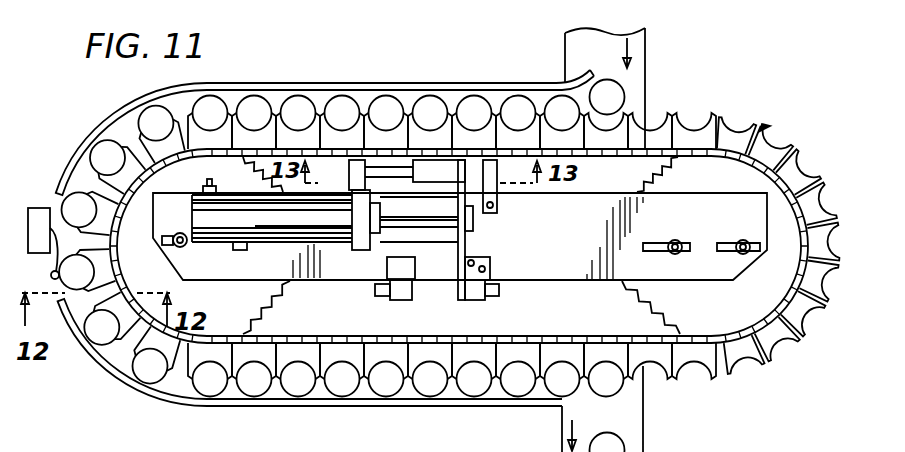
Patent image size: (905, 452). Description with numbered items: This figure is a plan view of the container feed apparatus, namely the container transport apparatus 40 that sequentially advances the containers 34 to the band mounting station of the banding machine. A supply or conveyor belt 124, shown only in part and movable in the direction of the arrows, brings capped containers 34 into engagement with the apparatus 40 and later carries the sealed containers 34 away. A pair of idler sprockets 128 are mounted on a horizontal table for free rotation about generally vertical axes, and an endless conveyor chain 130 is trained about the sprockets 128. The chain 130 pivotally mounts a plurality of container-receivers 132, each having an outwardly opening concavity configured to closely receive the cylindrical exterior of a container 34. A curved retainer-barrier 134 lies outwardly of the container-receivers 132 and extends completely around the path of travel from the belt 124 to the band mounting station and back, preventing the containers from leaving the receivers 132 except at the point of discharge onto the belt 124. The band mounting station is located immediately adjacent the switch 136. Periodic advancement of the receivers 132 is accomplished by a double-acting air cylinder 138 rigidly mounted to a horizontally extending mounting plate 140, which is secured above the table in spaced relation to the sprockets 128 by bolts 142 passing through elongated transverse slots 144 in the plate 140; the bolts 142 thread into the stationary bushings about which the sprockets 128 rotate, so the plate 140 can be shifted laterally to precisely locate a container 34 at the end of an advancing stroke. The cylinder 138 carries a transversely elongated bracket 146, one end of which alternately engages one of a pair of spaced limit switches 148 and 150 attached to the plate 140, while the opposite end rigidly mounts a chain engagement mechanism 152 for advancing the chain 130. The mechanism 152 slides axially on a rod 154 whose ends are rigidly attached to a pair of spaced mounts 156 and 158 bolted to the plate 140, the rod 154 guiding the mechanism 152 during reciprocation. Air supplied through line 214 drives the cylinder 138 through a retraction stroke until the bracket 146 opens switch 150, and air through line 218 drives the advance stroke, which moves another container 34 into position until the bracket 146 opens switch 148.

The containers 34 is at (625, 97).
The container transport apparatus 40 is at (770, 126).
The supply or conveyor belt 124 is at (648, 38).
The idler sprockets 128 is at (461, 245).
The endless conveyor chain 130 is at (810, 200).
The container-receivers 132 is at (267, 130).
The curved retainer-barrier 134 is at (398, 83).
The switch 136 is at (40, 208).
The double-acting air cylinder 138 is at (326, 236).
The mounting plate 140 is at (593, 203).
The bolts 142 is at (178, 235).
The elongated transverse slots 144 is at (182, 247).
The transversely elongated bracket 146 is at (466, 244).
The limit switch 148 is at (398, 297).
The limit switch 150 is at (476, 297).
The chain engagement mechanism 152 is at (442, 168).
The rod 154 is at (373, 165).
The mount 156 is at (350, 170).
The mount 158 is at (495, 186).
The line 214 is at (212, 182).
The line 218 is at (332, 192).